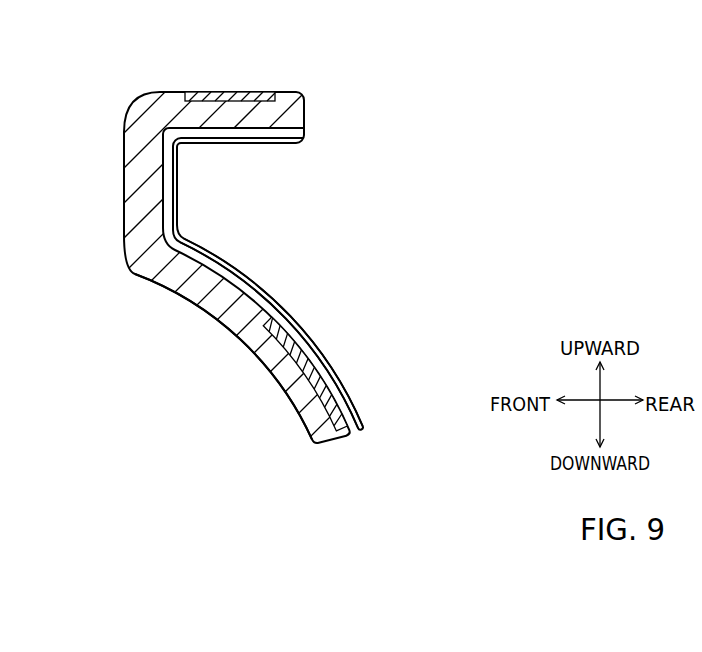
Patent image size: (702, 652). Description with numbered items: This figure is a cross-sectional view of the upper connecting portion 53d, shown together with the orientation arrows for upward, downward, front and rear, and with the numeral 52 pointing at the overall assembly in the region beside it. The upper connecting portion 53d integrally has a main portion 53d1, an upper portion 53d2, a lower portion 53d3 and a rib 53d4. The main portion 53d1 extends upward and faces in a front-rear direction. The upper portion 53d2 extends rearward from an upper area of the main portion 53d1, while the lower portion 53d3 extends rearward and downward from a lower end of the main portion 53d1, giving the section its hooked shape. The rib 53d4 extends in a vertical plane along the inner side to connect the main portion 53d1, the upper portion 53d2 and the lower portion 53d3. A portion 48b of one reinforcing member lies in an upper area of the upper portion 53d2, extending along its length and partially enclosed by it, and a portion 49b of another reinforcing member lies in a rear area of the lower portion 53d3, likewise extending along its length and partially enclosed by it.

The upper connecting portion 53d is at (312, 90).
The main portion 53d1 is at (133, 188).
The upper portion 53d2 is at (133, 110).
The lower portion 53d3 is at (238, 323).
The rib 53d4 is at (247, 285).
The portion of the reinforcing member 48 48b is at (220, 92).
The portion of the reinforcing member 49 49b is at (303, 363).
The weather strip 52 is at (385, 118).